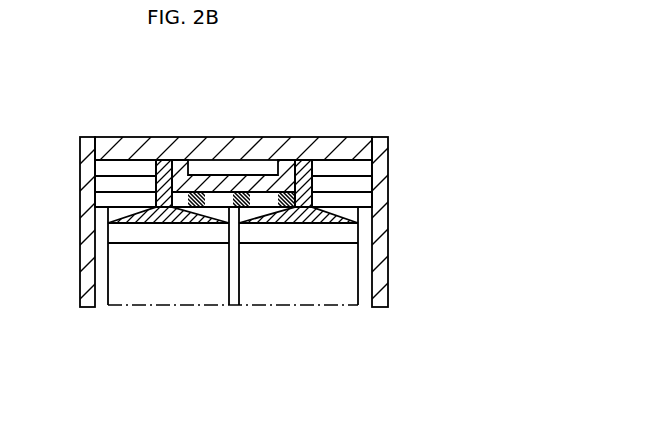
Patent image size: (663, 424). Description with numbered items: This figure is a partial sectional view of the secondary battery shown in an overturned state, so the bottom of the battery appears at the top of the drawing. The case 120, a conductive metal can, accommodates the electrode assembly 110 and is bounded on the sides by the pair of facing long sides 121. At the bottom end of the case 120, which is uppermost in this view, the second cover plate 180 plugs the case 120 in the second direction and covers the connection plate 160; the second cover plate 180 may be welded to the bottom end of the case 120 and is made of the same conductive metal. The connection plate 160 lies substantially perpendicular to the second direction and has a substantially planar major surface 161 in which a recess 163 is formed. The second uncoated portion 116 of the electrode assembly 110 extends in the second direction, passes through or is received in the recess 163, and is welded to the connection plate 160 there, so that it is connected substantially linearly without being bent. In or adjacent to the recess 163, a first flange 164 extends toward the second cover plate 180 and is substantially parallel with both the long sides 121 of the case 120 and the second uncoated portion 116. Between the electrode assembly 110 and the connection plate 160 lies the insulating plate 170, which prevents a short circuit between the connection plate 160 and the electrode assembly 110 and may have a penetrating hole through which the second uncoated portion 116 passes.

The electrode assembly 110 is at (168, 295).
The second uncoated portion 116 is at (167, 163).
The case 120 is at (403, 185).
The long sides 121 is at (384, 243).
The connection plate 160 is at (124, 170).
The major surface 161 is at (232, 172).
The recess 163 is at (329, 183).
The first flange 164 is at (287, 165).
The insulating plate 170 is at (262, 200).
The second cover plate 180 is at (357, 147).